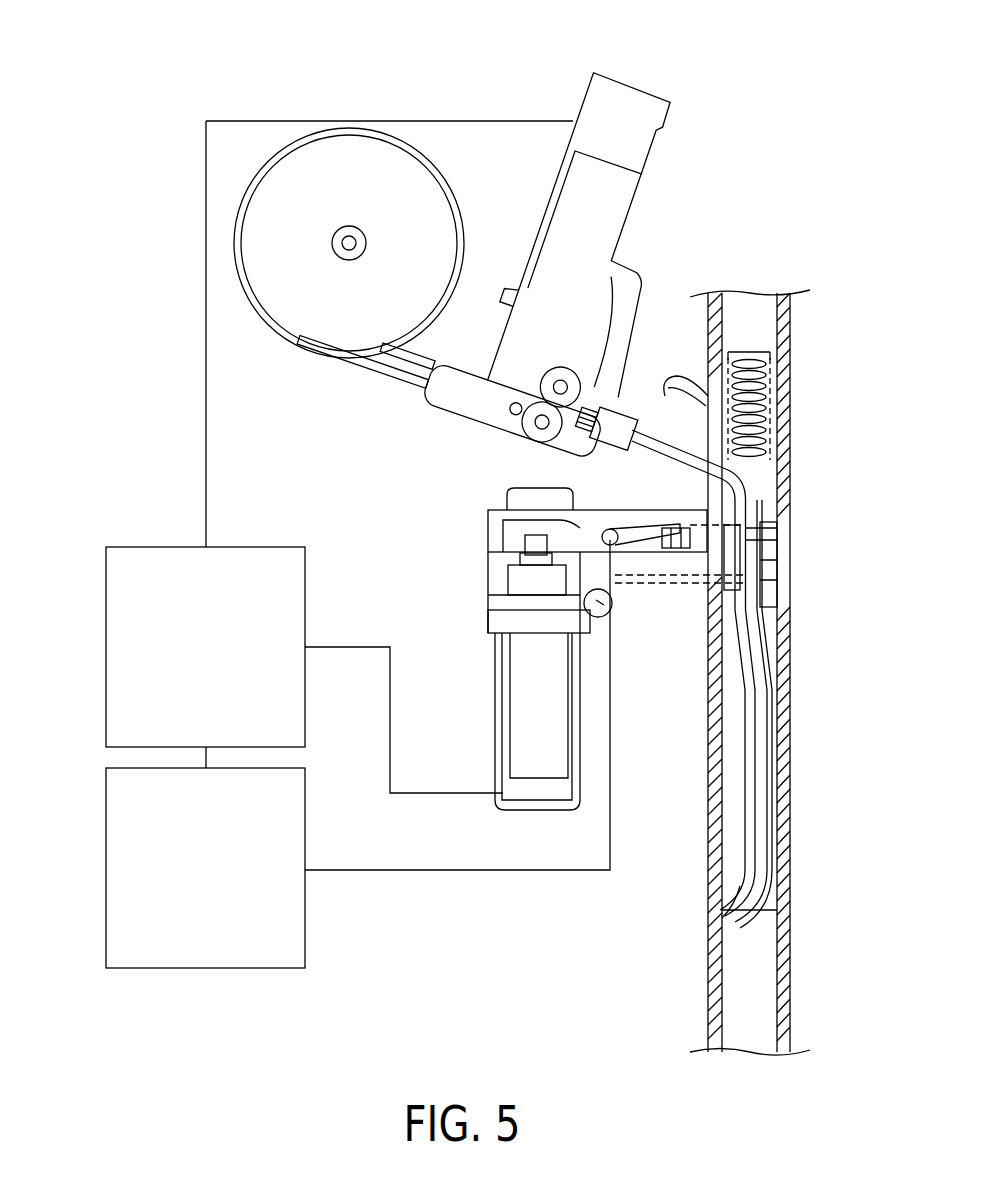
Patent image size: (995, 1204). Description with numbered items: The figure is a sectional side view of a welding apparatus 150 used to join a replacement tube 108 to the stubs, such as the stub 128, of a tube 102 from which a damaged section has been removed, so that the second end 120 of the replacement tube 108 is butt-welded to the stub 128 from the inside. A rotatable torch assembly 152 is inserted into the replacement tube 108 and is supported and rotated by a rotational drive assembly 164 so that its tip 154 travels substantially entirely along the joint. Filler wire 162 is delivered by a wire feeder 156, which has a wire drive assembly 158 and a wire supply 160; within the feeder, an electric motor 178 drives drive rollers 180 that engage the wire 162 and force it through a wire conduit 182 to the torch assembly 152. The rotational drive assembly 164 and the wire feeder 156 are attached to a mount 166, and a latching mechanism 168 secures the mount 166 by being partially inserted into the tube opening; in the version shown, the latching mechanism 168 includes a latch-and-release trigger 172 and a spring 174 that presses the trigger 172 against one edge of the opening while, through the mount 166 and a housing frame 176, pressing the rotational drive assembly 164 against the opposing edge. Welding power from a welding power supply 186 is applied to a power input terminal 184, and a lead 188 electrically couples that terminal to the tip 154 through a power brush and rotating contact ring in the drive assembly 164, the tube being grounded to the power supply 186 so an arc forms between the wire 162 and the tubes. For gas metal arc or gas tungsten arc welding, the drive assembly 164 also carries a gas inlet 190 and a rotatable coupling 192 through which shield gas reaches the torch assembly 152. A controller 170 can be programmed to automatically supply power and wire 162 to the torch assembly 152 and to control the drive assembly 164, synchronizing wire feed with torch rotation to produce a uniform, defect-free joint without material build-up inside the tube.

The tube 102 is at (795, 1020).
The replacement tube 108 is at (790, 735).
The second end of the replacement tube 120 is at (815, 925).
The stub 128 is at (815, 970).
The apparatus 150 is at (255, 58).
The rotatable torch assembly 152 is at (738, 750).
The tip 154 is at (720, 935).
The wire feeder 156 is at (426, 421).
The wire drive assembly 158 is at (612, 100).
The wire supply 160 is at (342, 150).
The filler wire 162 is at (445, 363).
The rotational drive assembly 164 is at (565, 649).
The mount 166 is at (603, 490).
The latching mechanism 168 is at (678, 355).
The controller 170 is at (106, 635).
The latch-and-release trigger 172 is at (690, 396).
The spring 174 is at (770, 380).
The housing frame 176 is at (490, 532).
The electric motor 178 is at (612, 195).
The drive rollers 180 is at (548, 374).
The wire conduit 182 is at (768, 487).
The power input terminal 184 is at (612, 525).
The welding power supply 186 is at (106, 866).
The lead 188 is at (625, 535).
The gas inlet 190 is at (602, 616).
The rotatable coupling 192 is at (798, 587).